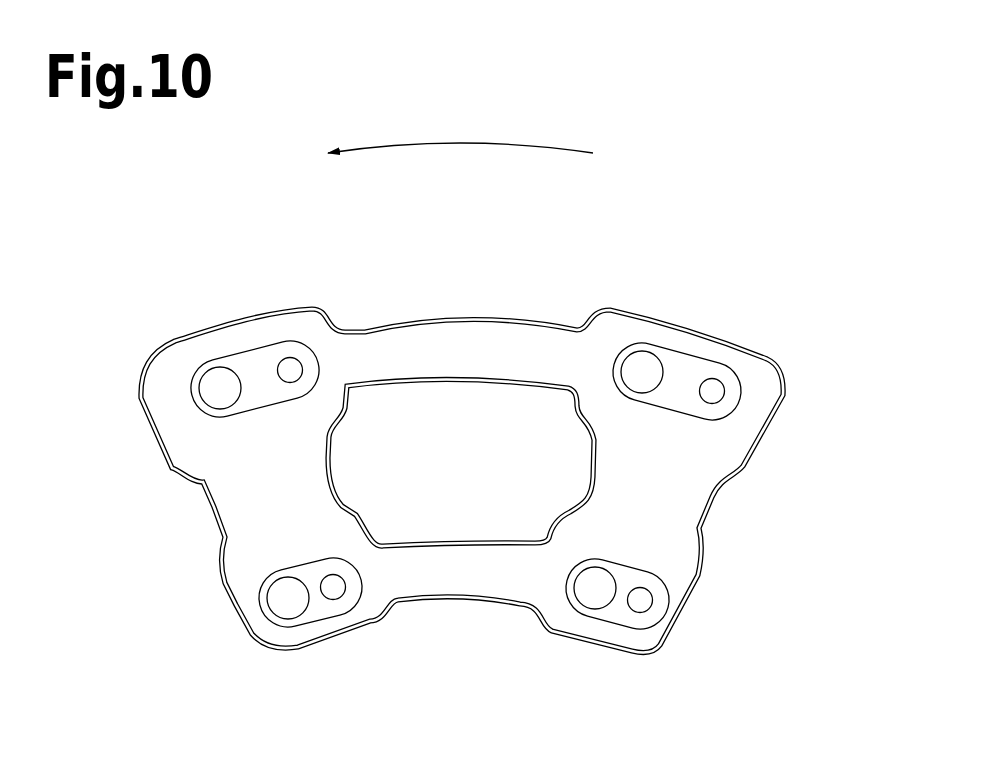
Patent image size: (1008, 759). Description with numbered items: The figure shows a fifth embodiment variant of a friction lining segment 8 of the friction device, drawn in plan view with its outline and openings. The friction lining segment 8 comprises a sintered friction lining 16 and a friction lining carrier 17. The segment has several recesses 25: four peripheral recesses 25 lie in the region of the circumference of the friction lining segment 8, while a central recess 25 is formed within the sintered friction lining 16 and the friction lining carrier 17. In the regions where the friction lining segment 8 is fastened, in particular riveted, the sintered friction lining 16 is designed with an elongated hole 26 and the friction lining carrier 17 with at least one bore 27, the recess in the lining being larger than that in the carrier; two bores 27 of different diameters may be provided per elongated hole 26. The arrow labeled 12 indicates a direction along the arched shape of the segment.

The friction lining segment 8 is at (796, 268).
The circumferential direction 12 is at (463, 143).
The sintered friction lining 16 is at (694, 449).
The friction lining carrier 17 is at (655, 312).
The recess 25 is at (252, 360).
The elongated hole 26 is at (306, 568).
The bore 27 is at (277, 607).